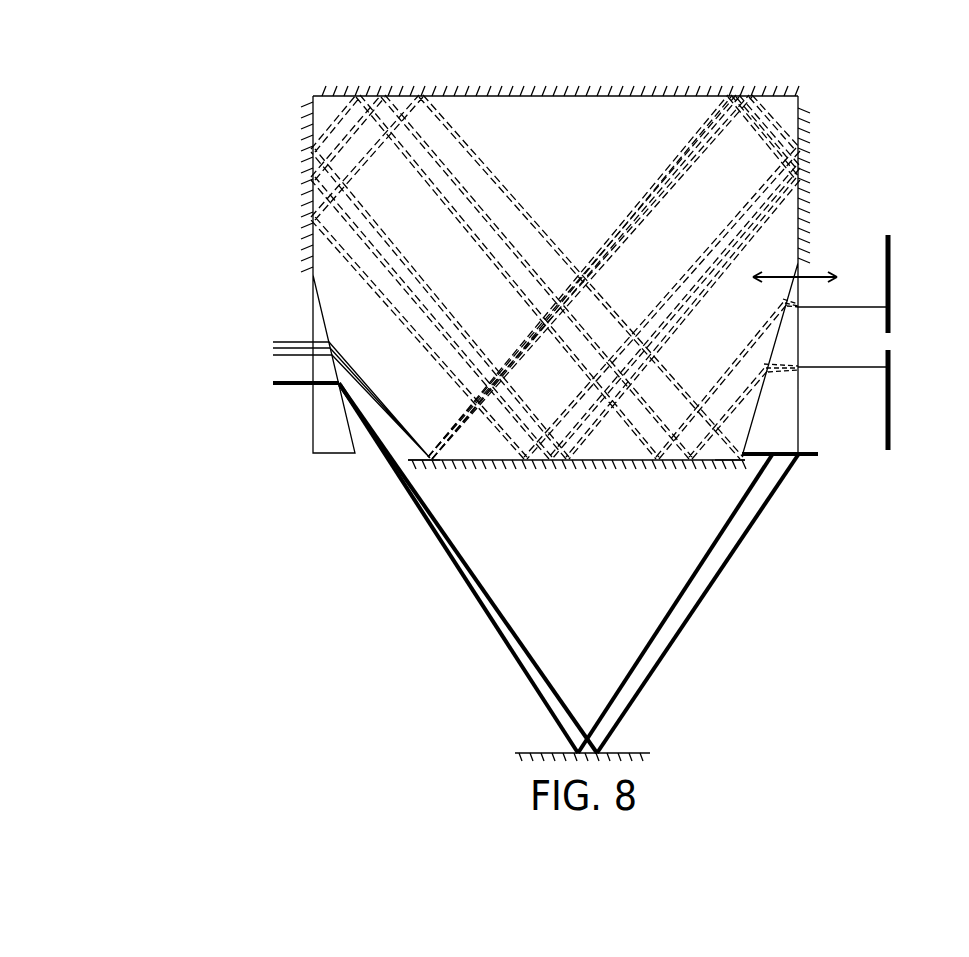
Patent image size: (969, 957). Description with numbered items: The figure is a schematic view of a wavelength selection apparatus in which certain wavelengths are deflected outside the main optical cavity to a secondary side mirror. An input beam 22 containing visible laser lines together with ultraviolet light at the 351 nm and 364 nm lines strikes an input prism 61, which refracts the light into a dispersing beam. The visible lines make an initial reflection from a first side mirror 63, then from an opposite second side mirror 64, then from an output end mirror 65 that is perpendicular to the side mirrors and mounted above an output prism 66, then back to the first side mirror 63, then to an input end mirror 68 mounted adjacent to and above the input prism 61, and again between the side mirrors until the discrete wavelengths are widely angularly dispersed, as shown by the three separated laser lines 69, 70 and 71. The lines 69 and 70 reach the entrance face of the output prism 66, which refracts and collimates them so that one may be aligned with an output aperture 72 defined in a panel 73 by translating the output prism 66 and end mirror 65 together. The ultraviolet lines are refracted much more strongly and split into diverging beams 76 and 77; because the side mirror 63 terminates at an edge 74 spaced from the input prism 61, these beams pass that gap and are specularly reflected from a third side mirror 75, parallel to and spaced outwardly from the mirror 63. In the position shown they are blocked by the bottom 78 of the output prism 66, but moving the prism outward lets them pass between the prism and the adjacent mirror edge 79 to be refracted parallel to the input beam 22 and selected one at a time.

The input beam 22 is at (292, 335).
The input prism 61 is at (313, 420).
The first side mirror 63 is at (528, 468).
The second side mirror 64 is at (584, 93).
The output end mirror 65 is at (800, 190).
The output prism 66 is at (800, 432).
The input end mirror 68 is at (308, 176).
The spectral component beam 69 is at (835, 303).
The spectral component beam 70 is at (826, 372).
The spectral component beam 71 is at (540, 218).
The output aperture 72 is at (886, 357).
The panel 73 is at (886, 312).
The mirror edge 74 is at (415, 463).
The third side mirror 75 is at (632, 752).
The diverging beam 76 is at (652, 635).
The diverging beam 77 is at (675, 648).
The bottom of output prism 78 is at (805, 458).
The mirror edge 79 is at (740, 465).
The 351 nm laser line 351 is at (507, 568).
The 364 nm laser line 364 is at (565, 569).